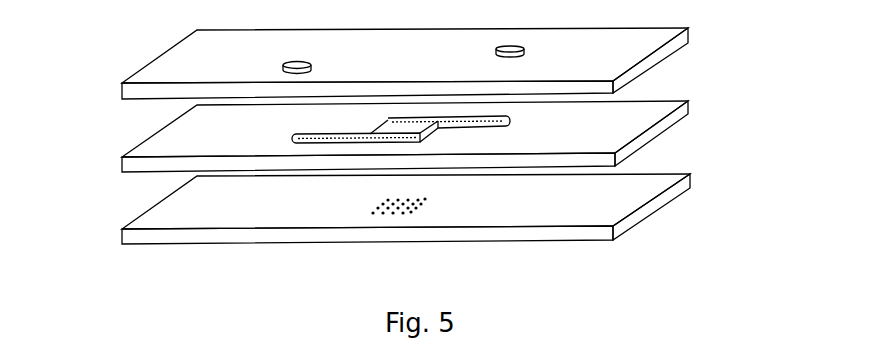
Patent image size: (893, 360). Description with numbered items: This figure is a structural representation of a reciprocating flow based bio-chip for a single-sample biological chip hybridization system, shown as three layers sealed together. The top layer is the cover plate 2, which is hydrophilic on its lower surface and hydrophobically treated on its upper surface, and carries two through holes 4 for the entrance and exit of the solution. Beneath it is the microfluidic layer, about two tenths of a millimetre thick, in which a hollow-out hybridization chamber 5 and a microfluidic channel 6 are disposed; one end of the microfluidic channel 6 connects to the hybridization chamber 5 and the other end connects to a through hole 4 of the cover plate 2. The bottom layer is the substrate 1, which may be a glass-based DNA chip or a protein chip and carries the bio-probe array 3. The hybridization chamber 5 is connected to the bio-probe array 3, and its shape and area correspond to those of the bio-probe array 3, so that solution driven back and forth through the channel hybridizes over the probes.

The substrate 1 is at (137, 250).
The cover plate 2 is at (135, 83).
The bio-probe array 3 is at (446, 220).
The through hole 4 is at (550, 62).
The hybridization chamber 5 is at (431, 148).
The microfluidic channel 6 is at (526, 135).